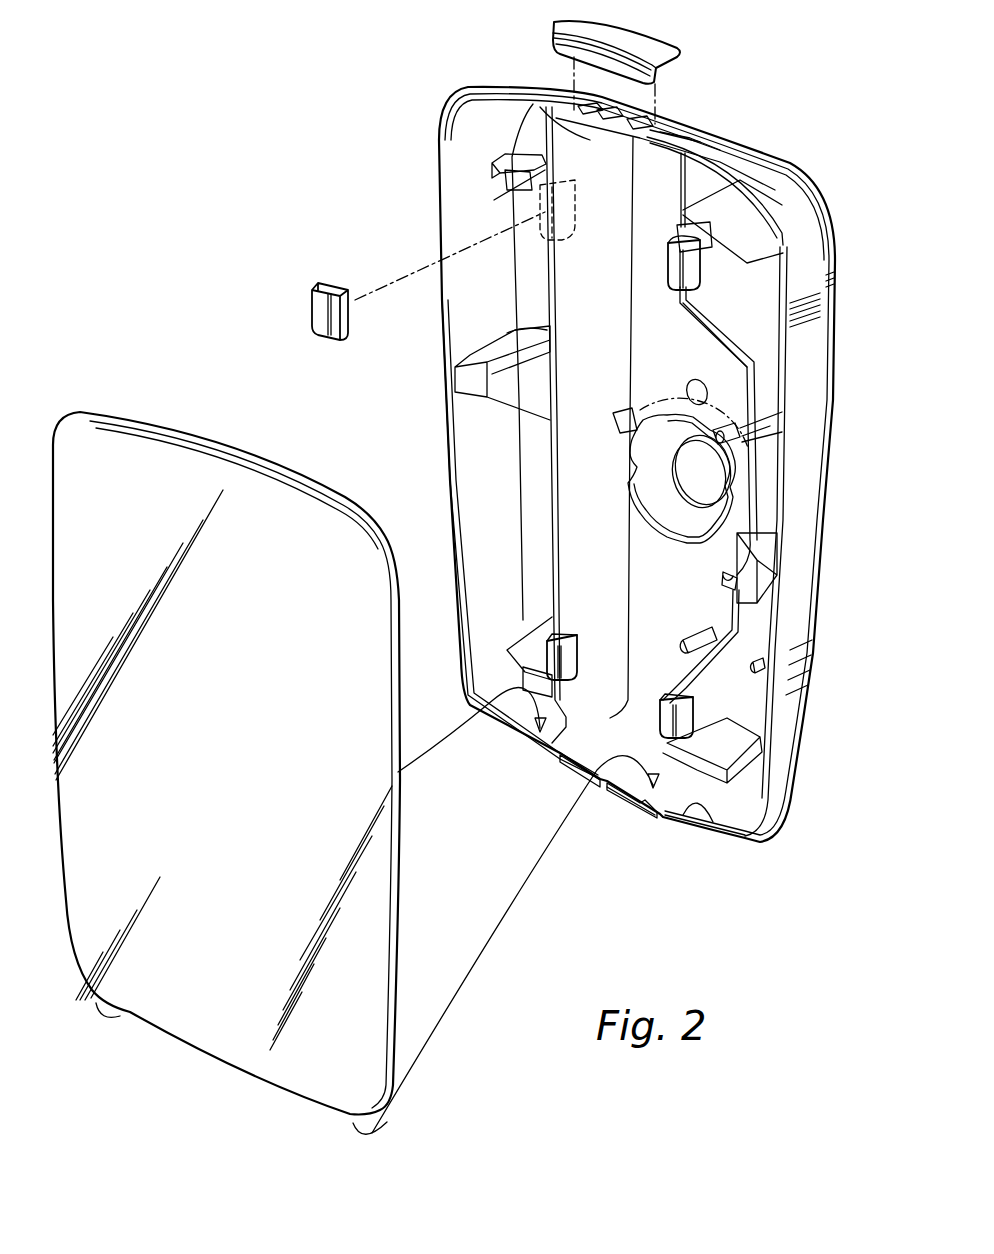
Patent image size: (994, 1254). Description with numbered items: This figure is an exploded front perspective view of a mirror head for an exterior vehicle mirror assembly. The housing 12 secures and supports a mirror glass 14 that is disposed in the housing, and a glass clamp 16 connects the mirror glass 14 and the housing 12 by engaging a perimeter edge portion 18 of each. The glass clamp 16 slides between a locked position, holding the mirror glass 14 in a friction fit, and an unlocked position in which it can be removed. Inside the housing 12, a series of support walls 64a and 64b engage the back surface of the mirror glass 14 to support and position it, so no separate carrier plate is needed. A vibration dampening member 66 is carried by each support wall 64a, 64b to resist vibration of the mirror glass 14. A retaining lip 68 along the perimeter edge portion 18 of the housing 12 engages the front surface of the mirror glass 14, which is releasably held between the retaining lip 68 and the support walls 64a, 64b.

The housing 12 is at (780, 167).
The mirror glass 14 is at (122, 443).
The glass clamp 16 is at (577, 23).
The perimeter edge portion 18 is at (672, 135).
The support wall 64a is at (587, 137).
The support wall 64b is at (710, 296).
The vibration dampening member 66 is at (315, 300).
The retaining lip 68 is at (696, 806).